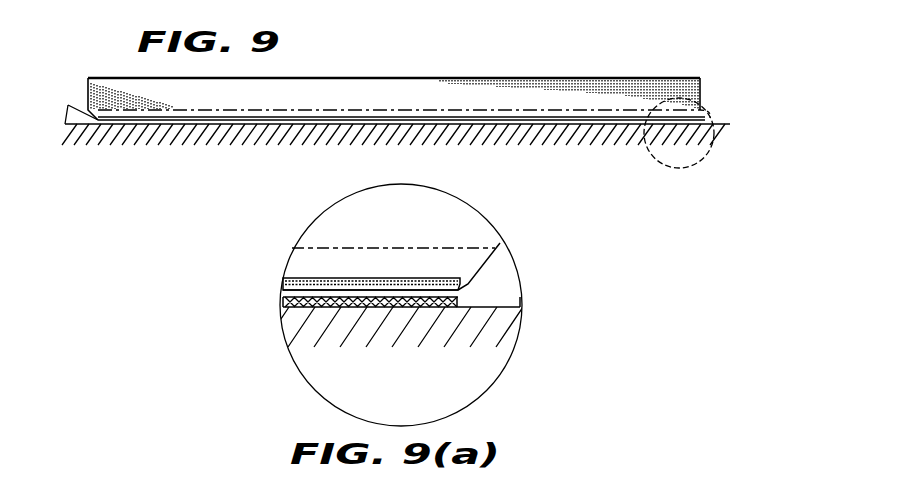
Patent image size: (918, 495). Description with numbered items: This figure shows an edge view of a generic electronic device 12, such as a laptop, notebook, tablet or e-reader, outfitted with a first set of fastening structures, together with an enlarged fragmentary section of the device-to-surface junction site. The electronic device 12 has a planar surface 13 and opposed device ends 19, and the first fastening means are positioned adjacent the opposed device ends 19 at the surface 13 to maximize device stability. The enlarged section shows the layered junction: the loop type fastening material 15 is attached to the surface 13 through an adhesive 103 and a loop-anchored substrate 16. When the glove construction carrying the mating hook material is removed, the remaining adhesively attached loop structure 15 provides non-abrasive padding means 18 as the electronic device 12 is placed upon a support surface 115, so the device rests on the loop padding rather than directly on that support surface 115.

In FIG. 9, the electronic device 12 is at (700, 80).
In FIG. 9, the surface 13 is at (554, 132).
The surface 13 is at (487, 297).
In FIG. 9, the loop type fastening material 15 is at (68, 127).
The loop type fastening material 15 is at (284, 302).
The loop-anchored substrate 16 is at (292, 292).
In FIG. 9, the non-abrasive padding means 18 is at (143, 124).
The non-abrasive padding means 18 is at (489, 298).
In FIG. 9, the opposed device ends 19 is at (88, 92).
The opposed device ends 19 is at (500, 244).
The adhesive 103 is at (283, 278).
The support surface 115 is at (520, 299).